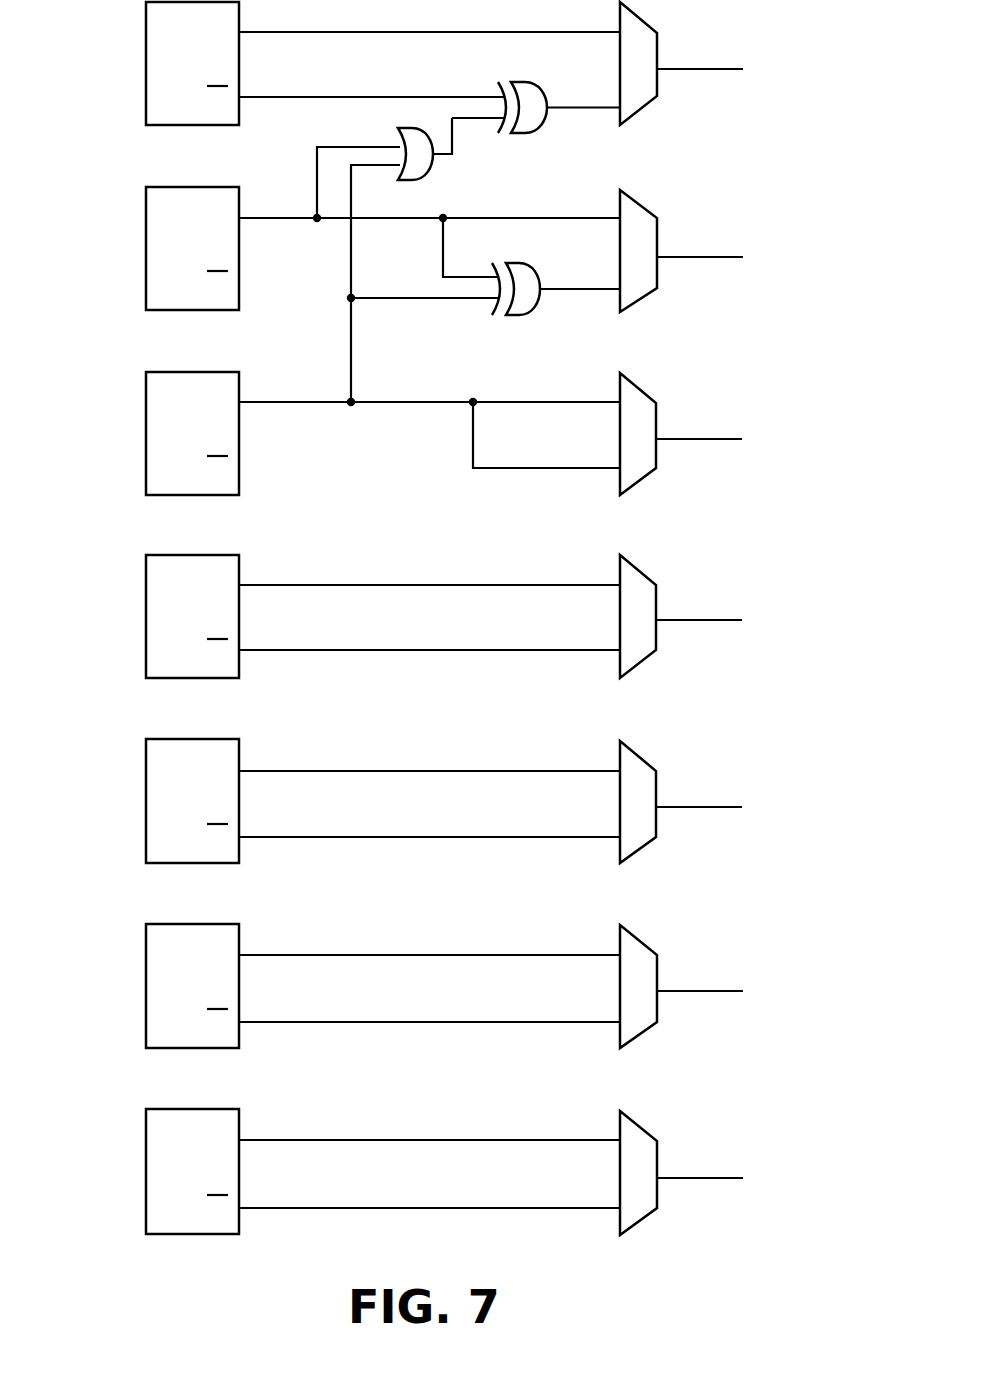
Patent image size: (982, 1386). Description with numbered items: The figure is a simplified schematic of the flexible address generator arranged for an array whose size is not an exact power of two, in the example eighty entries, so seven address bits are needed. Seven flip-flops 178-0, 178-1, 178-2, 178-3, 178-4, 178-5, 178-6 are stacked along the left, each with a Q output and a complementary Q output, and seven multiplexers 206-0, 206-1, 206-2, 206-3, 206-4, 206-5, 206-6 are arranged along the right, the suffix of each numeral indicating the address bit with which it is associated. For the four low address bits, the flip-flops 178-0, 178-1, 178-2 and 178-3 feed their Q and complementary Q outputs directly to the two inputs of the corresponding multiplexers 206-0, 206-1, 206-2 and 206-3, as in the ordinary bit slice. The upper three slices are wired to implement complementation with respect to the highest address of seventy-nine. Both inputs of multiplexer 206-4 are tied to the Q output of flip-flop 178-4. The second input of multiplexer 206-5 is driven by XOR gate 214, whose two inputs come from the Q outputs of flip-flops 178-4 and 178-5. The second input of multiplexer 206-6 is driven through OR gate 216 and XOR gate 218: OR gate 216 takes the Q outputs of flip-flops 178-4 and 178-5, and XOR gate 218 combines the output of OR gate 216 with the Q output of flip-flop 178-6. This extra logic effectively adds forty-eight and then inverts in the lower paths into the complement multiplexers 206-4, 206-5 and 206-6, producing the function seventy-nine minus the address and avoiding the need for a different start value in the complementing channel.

The flip-flop 178-6 is at (146, 100).
The flip-flop 178-5 is at (146, 285).
The flip-flop 178-4 is at (146, 470).
The flip-flop 178-3 is at (146, 652).
The flip-flop 178-2 is at (146, 842).
The flip-flop 178-1 is at (146, 1029).
The flip-flop 178-0 is at (146, 1215).
The multiplexer 206-6 is at (640, 112).
The multiplexer 206-5 is at (638, 300).
The multiplexer 206-4 is at (637, 478).
The multiplexer 206-3 is at (645, 662).
The multiplexer 206-2 is at (645, 848).
The multiplexer 206-1 is at (645, 1034).
The multiplexer 206-0 is at (654, 1215).
The XOR gate 214 is at (513, 317).
The OR gate 216 is at (410, 178).
The XOR gate 218 is at (532, 132).